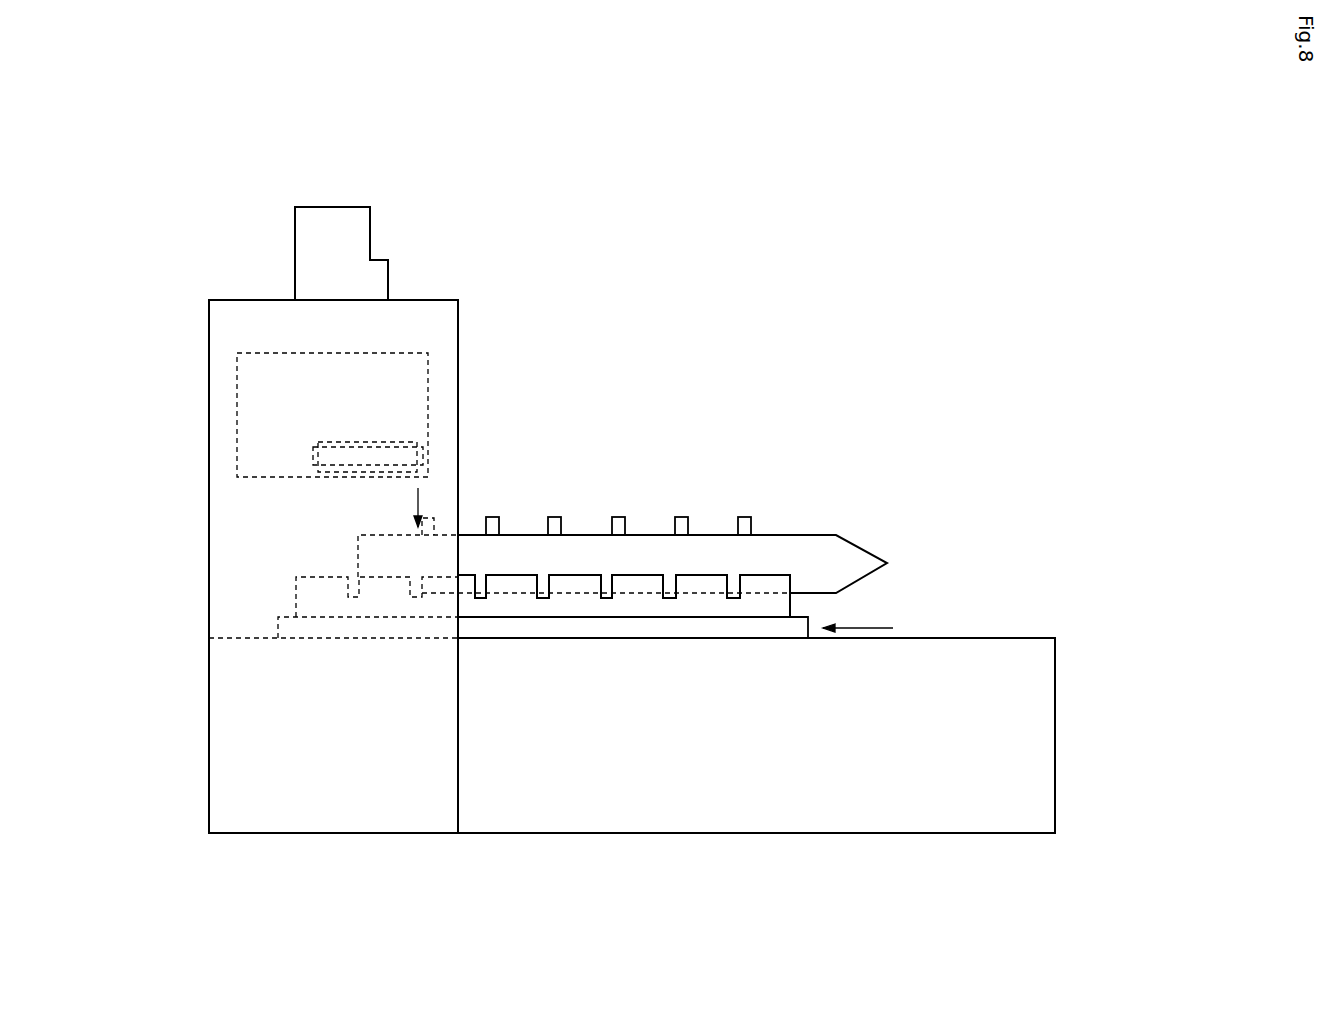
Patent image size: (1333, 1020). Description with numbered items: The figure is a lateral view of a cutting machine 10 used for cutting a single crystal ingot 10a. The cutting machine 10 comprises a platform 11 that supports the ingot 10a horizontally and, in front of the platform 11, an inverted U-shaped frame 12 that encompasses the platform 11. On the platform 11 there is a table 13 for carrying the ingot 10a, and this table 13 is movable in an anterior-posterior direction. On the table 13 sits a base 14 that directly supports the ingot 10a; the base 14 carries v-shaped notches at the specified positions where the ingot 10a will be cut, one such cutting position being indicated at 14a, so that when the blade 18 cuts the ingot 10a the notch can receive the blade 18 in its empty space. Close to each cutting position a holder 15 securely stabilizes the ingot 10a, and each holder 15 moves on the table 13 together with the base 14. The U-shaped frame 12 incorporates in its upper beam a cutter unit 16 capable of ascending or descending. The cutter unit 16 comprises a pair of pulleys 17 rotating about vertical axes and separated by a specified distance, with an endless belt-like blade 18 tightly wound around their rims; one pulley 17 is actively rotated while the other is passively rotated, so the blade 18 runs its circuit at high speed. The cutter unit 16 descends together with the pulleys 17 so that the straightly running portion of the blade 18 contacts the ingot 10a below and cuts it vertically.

The cutting machine 10 is at (276, 562).
The ingot 10a is at (860, 540).
The platform 11 is at (675, 808).
The inverted U-shaped frame 12 is at (243, 560).
The table 13 is at (795, 615).
The base 14 is at (640, 575).
The groove 14a is at (732, 575).
The holder 15 is at (617, 517).
The cutter unit 16 is at (398, 353).
The pulleys 17 is at (400, 442).
The blade 18 is at (423, 452).